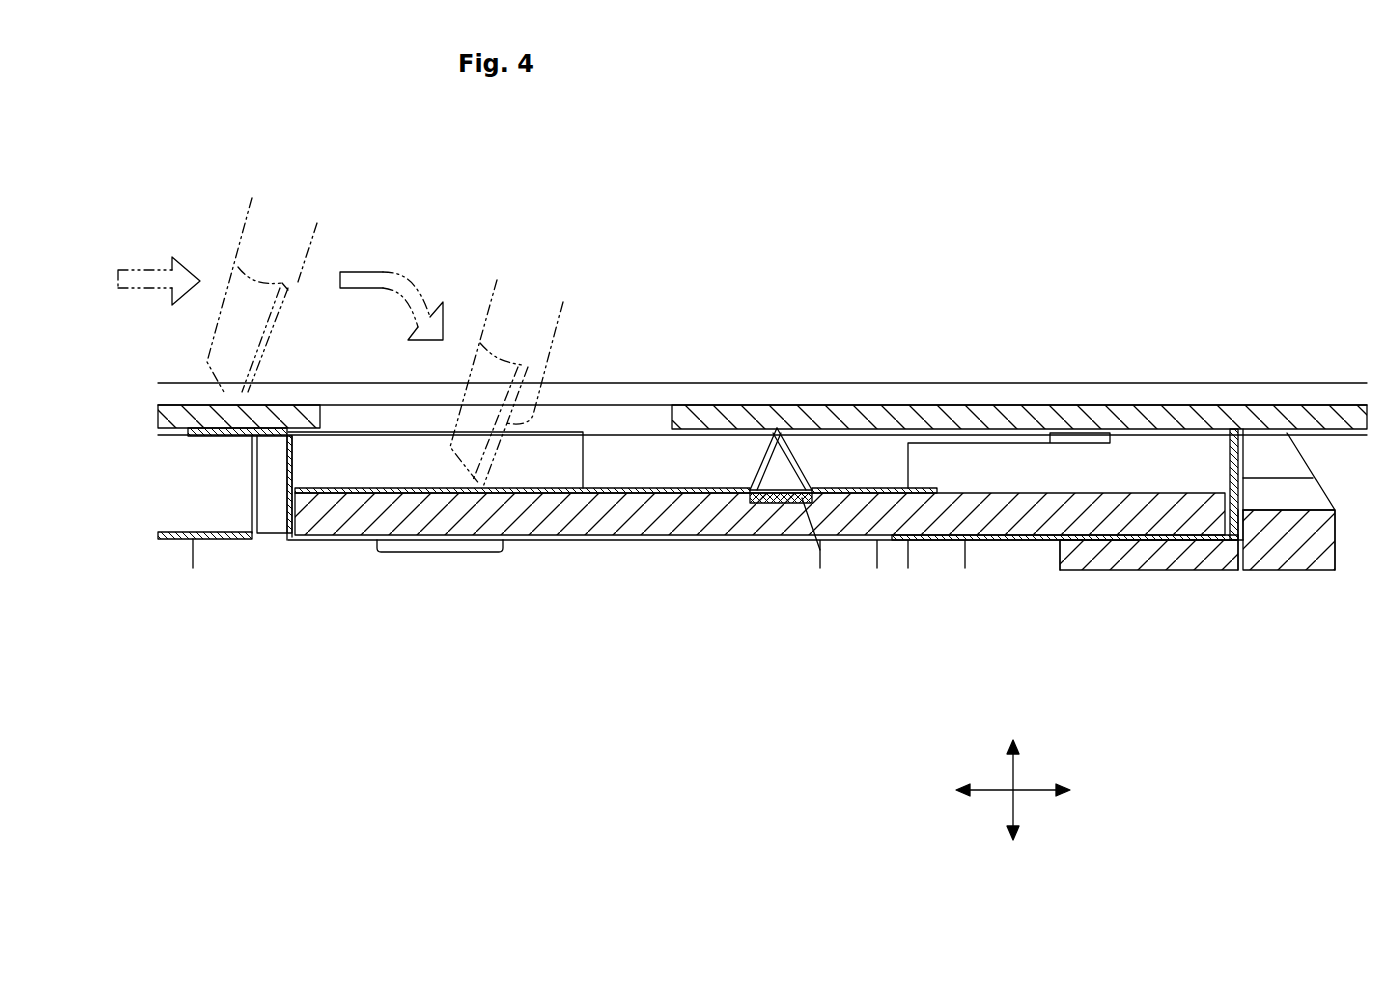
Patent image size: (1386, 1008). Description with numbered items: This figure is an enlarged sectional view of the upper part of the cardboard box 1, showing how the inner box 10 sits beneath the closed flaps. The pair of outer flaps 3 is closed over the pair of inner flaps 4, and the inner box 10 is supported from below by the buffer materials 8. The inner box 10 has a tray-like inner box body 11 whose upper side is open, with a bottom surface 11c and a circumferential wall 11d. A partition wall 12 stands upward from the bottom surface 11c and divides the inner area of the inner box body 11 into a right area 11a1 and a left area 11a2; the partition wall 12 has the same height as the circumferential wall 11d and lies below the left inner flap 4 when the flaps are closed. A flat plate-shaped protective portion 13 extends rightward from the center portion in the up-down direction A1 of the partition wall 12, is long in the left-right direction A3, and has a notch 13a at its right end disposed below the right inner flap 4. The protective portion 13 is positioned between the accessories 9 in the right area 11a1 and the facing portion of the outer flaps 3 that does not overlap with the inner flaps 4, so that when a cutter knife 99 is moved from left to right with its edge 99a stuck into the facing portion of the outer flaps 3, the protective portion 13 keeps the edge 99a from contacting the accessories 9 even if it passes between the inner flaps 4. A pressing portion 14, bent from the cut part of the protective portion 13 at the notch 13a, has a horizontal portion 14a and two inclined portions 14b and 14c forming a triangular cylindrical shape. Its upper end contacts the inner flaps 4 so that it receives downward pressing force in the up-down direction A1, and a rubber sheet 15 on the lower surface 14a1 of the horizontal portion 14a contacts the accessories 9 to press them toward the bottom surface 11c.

The cardboard box 1 is at (1027, 197).
The outer flaps 3 is at (1163, 383).
The inner flaps 4 is at (183, 418).
The buffer materials 8 is at (1288, 545).
The accessories 9 is at (1113, 522).
The inner box 10 is at (620, 462).
The inner box body 11 is at (673, 551).
The right area 11a1 is at (1033, 468).
The left area 11a2 is at (183, 517).
The bottom surface 11c is at (1163, 520).
The circumferential wall 11d is at (1240, 470).
The partition wall 12 is at (292, 465).
The protective portion 13 is at (551, 494).
The notch 13a is at (900, 492).
The pressing portion 14 is at (805, 350).
The horizontal portion 14a is at (790, 488).
The inclined portion 14b is at (787, 484).
The inclined portion 14c is at (766, 470).
The lower surface 14a1 is at (805, 500).
The rubber sheet 15 is at (790, 498).
The cutter knife 99 is at (226, 300).
The edge 99a is at (540, 378).
The left-right direction A3 is at (1033, 790).
The up-down direction A1 is at (1013, 812).